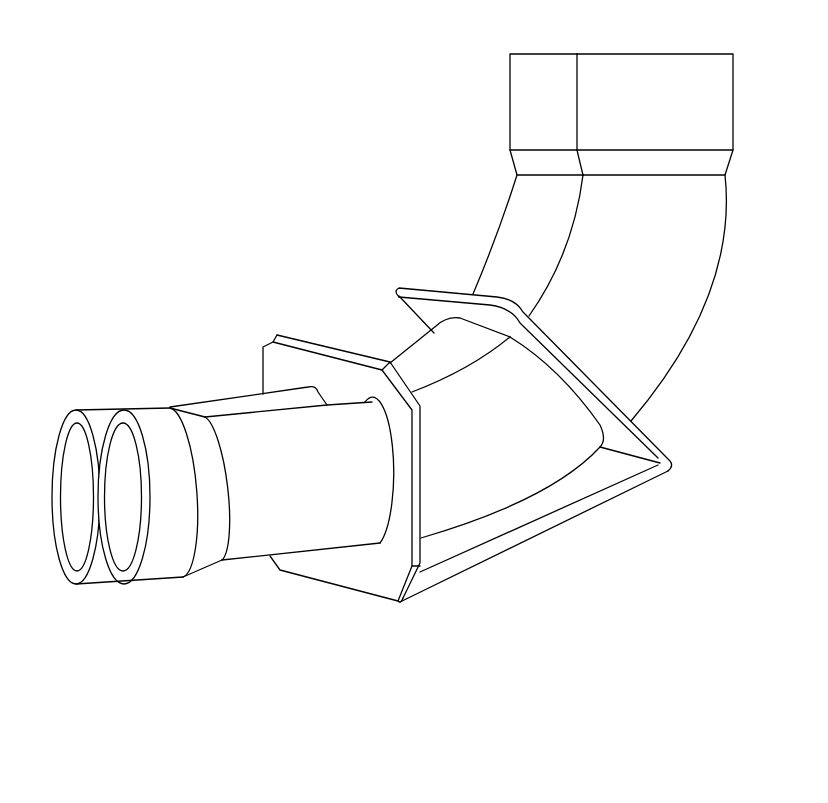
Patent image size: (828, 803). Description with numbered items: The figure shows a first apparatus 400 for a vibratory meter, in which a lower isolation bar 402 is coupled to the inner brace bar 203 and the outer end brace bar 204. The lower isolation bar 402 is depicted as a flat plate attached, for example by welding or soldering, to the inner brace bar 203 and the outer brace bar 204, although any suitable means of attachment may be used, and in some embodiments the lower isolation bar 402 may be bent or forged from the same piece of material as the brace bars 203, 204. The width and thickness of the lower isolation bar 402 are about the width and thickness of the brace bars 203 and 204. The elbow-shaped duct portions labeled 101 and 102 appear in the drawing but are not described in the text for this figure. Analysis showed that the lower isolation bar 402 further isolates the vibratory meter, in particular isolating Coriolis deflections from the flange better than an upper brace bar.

The first apparatus 400 is at (240, 136).
The first duct half 101 is at (497, 238).
The second duct half 102 is at (712, 290).
The inner brace bar 203 is at (665, 445).
The outer brace bar 204 is at (272, 342).
The lower isolation bar 402 is at (537, 534).